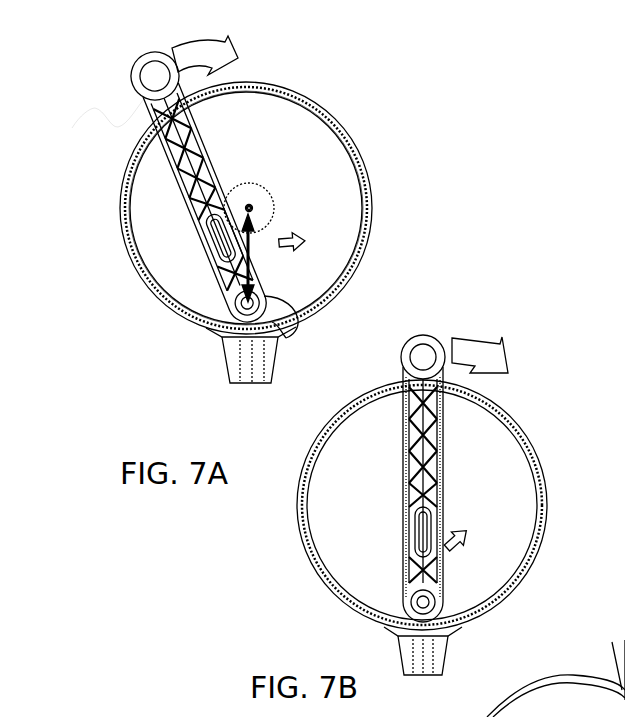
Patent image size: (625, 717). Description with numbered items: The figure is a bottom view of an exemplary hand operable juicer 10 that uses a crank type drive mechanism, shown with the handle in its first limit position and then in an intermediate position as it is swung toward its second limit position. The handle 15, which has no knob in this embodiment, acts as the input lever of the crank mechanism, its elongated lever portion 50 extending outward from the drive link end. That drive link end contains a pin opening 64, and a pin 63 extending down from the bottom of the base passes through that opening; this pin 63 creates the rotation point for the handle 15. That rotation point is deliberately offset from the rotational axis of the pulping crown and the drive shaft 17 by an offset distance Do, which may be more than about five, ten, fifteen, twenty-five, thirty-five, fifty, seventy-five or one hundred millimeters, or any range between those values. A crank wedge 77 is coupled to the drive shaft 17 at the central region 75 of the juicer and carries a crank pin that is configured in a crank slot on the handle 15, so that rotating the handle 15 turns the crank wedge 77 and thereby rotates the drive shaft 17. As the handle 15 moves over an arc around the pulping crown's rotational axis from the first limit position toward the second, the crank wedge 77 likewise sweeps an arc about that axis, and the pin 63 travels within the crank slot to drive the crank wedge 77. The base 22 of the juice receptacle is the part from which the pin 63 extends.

The hand operable juicer 10 is at (279, 80).
The handle 15 is at (130, 163).
The drive shaft 17 is at (254, 204).
The base 22 is at (272, 188).
The lever arm 50 is at (168, 171).
The pin 63 is at (297, 316).
The pin opening 64 is at (290, 335).
The axis 75 is at (275, 205).
The crank wedge 77 is at (255, 209).
The offset distance Do is at (260, 258).